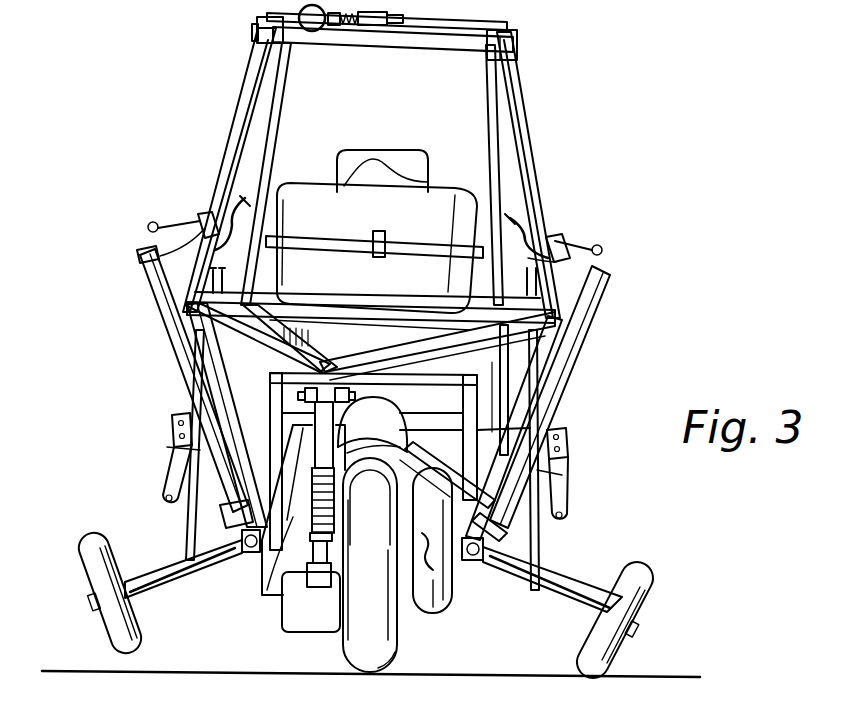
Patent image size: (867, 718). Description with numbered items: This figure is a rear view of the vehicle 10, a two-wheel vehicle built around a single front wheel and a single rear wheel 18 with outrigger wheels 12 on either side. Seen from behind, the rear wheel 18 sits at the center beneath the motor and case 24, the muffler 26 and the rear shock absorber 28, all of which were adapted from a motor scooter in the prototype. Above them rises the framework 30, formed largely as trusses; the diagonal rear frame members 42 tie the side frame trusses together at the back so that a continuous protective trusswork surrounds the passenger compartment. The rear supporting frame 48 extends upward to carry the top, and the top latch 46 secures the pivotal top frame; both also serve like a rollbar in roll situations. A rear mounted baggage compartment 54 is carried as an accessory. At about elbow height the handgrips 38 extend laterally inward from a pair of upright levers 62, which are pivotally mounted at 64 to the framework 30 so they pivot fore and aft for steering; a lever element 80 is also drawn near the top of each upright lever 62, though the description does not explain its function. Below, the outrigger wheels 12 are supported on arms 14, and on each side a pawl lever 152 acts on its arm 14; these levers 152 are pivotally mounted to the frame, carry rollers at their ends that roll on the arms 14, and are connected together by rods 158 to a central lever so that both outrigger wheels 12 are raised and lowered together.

The vehicle 10 is at (592, 138).
The outrigger wheels 12 is at (88, 572).
The arms 14 is at (161, 578).
The rear wheel 18 is at (392, 660).
The motor and case 24 is at (446, 586).
The muffler 26 is at (442, 513).
The rear shock absorber 28 is at (282, 595).
The framework 30 is at (565, 322).
The handgrips 38 is at (170, 245).
The diagonal rear frame members 42 is at (270, 348).
The top latch 46 is at (372, 28).
The rear supporting frame 48 is at (522, 105).
The rear mounted baggage compartment 54 is at (447, 195).
The upright levers 62 is at (152, 280).
The pivotal mounting 64 is at (236, 540).
The lever 80 is at (240, 200).
The pawl lever 152 is at (170, 474).
The rods 158 is at (190, 447).